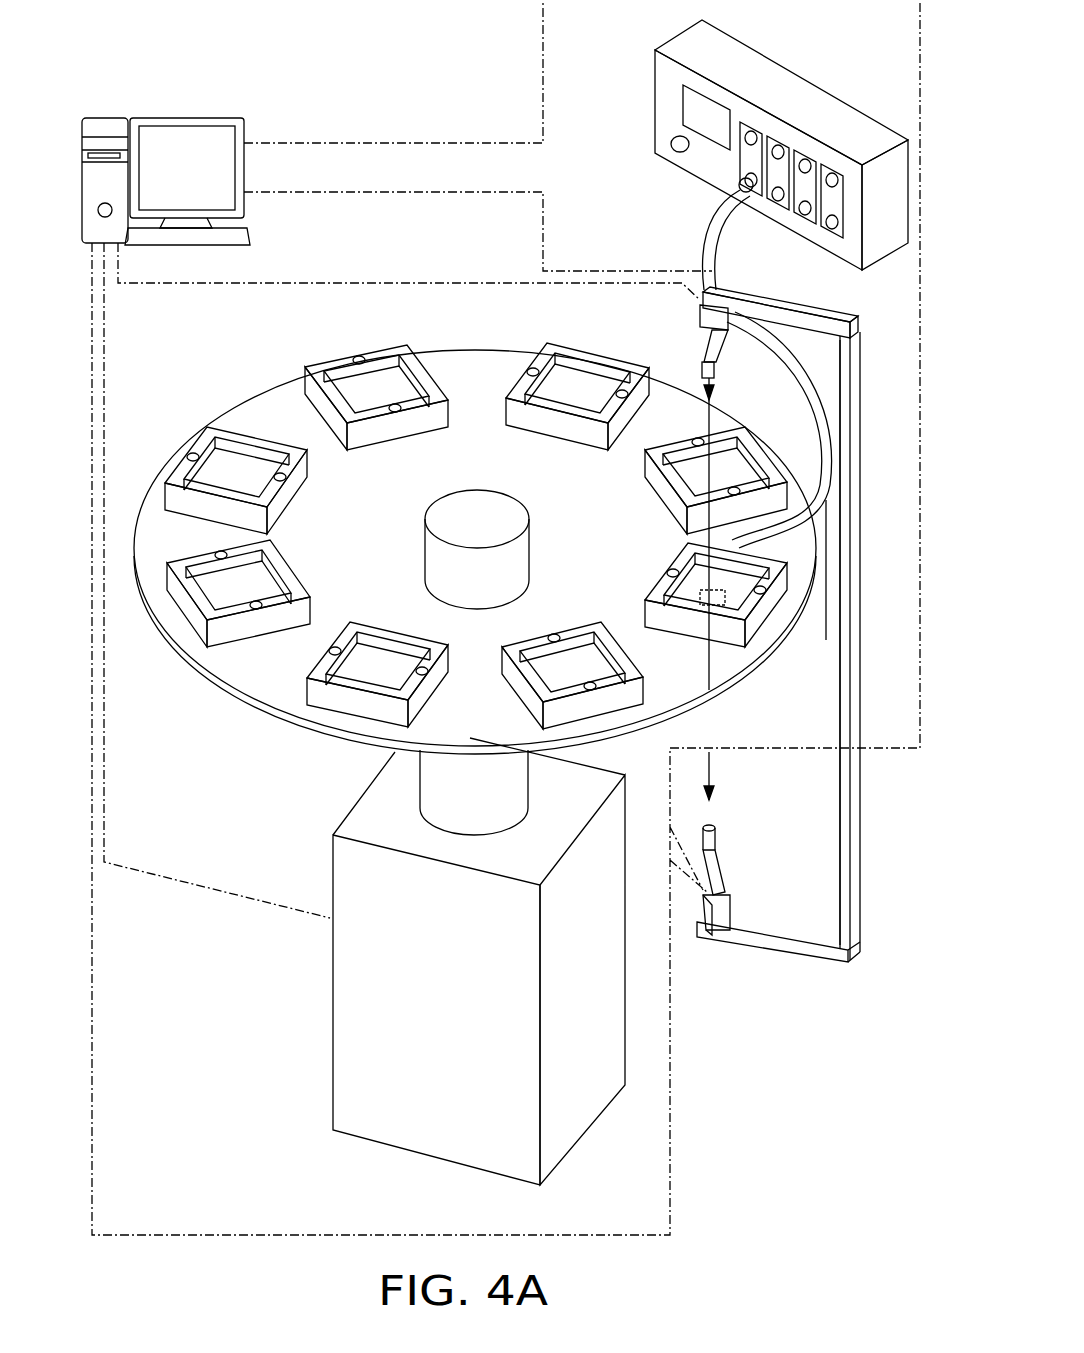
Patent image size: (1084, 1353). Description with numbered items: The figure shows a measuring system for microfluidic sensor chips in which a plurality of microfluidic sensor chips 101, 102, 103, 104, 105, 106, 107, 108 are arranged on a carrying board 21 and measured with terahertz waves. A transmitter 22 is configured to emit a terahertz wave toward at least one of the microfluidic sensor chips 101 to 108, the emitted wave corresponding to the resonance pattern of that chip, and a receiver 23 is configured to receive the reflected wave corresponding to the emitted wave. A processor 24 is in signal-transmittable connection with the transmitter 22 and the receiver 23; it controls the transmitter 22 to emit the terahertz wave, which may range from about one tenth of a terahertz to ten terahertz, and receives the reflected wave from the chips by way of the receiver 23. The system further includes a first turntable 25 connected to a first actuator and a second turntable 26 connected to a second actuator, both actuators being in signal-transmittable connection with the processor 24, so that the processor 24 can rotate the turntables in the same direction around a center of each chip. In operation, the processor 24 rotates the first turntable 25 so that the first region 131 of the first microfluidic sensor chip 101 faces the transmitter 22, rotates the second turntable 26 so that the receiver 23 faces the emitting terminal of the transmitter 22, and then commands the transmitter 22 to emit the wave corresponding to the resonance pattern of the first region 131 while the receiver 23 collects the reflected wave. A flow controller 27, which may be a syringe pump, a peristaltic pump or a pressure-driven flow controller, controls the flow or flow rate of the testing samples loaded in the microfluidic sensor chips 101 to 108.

The carrying board 21 is at (478, 368).
The transmitter 22 is at (700, 365).
The receiver 23 is at (718, 838).
The processor 24 is at (128, 105).
The first turntable 25 is at (745, 305).
The second turntable 26 is at (720, 870).
The flow controller 27 is at (768, 78).
The first region 131 is at (858, 636).
The first microfluidic sensor chip 101 is at (647, 563).
The microfluidic sensor chip 102 is at (586, 608).
The microfluidic sensor chip 103 is at (370, 608).
The microfluidic sensor chip 104 is at (308, 563).
The microfluidic sensor chip 105 is at (314, 504).
The microfluidic sensor chip 106 is at (374, 464).
The microfluidic sensor chip 107 is at (580, 464).
The microfluidic sensor chip 108 is at (641, 504).